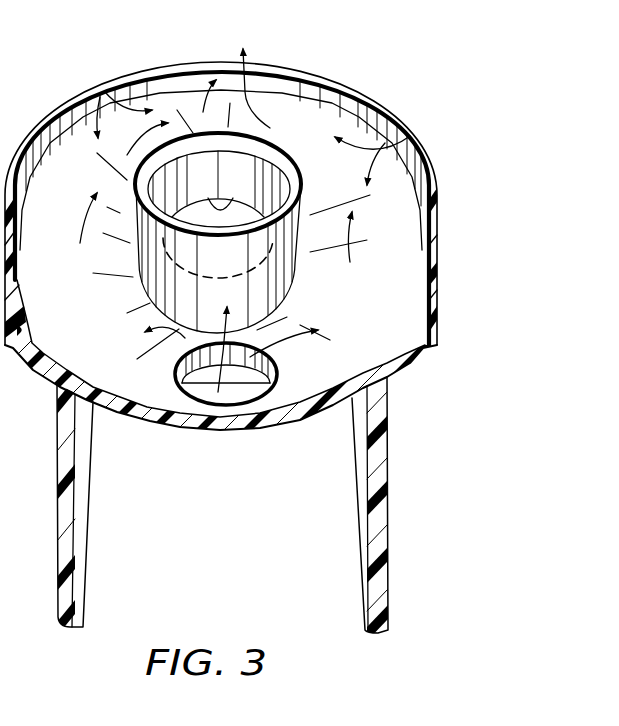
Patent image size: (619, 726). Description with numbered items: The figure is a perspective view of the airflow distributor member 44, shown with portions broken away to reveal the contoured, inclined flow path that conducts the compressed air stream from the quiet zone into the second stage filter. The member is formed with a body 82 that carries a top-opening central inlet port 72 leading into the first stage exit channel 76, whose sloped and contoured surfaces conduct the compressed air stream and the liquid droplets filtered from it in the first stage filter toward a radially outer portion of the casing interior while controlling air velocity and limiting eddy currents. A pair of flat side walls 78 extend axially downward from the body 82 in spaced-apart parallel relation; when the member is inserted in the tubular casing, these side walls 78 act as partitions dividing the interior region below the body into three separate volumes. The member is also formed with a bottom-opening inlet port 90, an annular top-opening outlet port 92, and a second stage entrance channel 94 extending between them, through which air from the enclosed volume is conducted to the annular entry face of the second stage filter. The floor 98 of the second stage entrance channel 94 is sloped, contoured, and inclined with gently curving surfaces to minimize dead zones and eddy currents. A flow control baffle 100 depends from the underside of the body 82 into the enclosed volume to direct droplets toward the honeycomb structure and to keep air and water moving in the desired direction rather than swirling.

The airflow distributor member 44 is at (142, 69).
The central inlet port 72 is at (252, 165).
The first stage exit channel 76 is at (218, 195).
The side walls 78 is at (63, 543).
The body 82 is at (433, 243).
The inlet port 90 is at (278, 367).
The annular top-opening outlet port 92 is at (66, 123).
The second stage entrance channel 94 is at (100, 97).
The floor 98 is at (107, 347).
The flow control baffle 100 is at (252, 375).